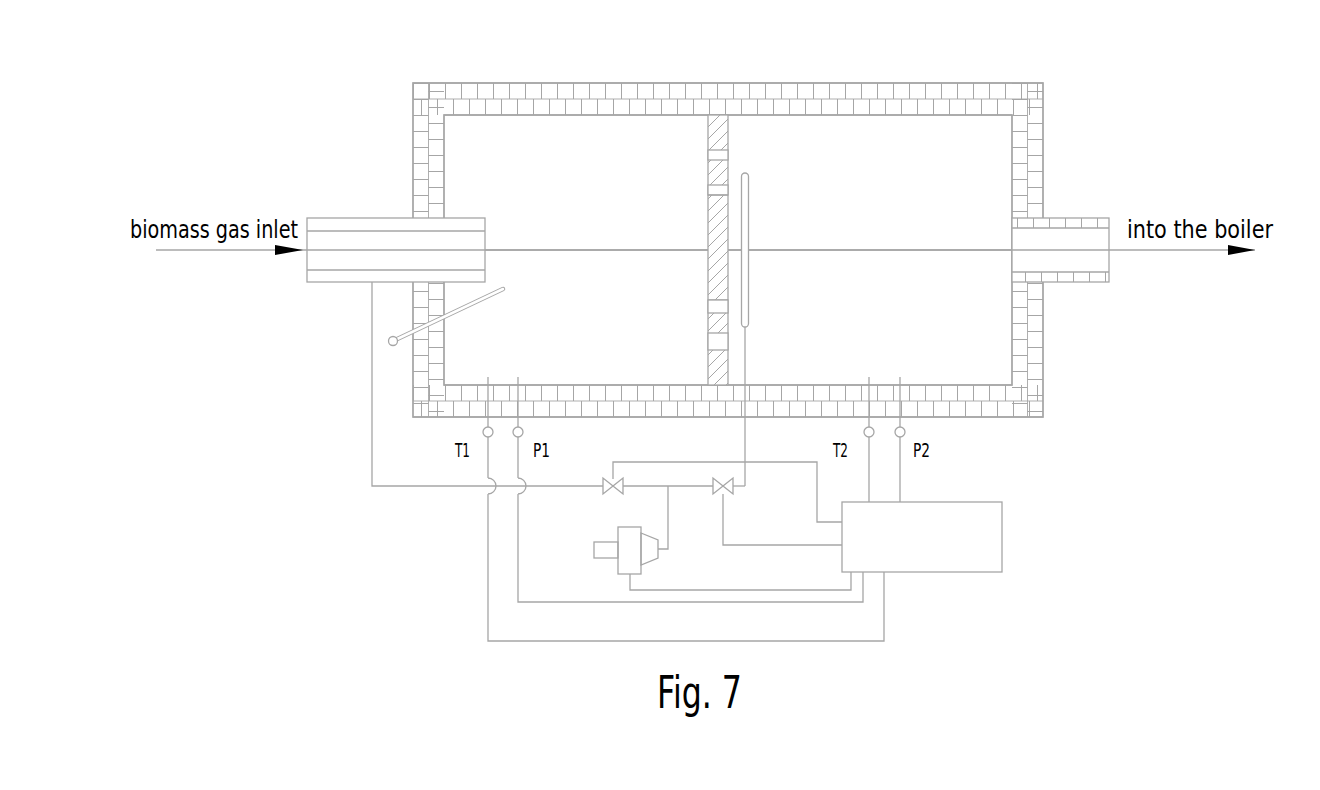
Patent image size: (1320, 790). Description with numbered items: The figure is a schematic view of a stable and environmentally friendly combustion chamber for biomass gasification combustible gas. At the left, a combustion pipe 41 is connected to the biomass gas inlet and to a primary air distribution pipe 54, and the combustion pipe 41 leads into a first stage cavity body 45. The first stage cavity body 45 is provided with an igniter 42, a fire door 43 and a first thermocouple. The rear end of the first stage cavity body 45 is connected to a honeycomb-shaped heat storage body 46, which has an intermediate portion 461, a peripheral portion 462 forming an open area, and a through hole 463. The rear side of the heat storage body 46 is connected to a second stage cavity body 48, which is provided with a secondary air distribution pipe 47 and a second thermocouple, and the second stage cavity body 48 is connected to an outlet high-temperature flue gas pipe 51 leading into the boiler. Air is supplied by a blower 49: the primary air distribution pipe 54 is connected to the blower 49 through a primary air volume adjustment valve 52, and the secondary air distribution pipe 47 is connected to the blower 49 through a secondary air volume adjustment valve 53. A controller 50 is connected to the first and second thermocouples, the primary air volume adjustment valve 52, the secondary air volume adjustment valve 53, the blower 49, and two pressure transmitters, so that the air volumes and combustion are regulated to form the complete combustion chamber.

The combustion pipe 41 is at (372, 240).
The igniter 42 is at (492, 298).
The fire door 43 is at (423, 139).
The first stage cavity body 45 is at (512, 160).
The heat storage body 46 is at (727, 220).
The intermediate portion of the heat storage body 461 is at (717, 233).
The peripheral portion of the heat storage body 462 is at (710, 170).
The through hole 463 is at (717, 309).
The secondary air distribution pipe 47 is at (748, 172).
The second stage cavity body 48 is at (895, 153).
The blower 49 is at (596, 546).
The controller 50 is at (940, 552).
The outlet high-temperature flue gas pipe 51 is at (1070, 237).
The primary air volume adjustment valve 52 is at (603, 488).
The secondary air volume adjustment valve 53 is at (733, 490).
The primary air distribution pipe 54 is at (372, 383).